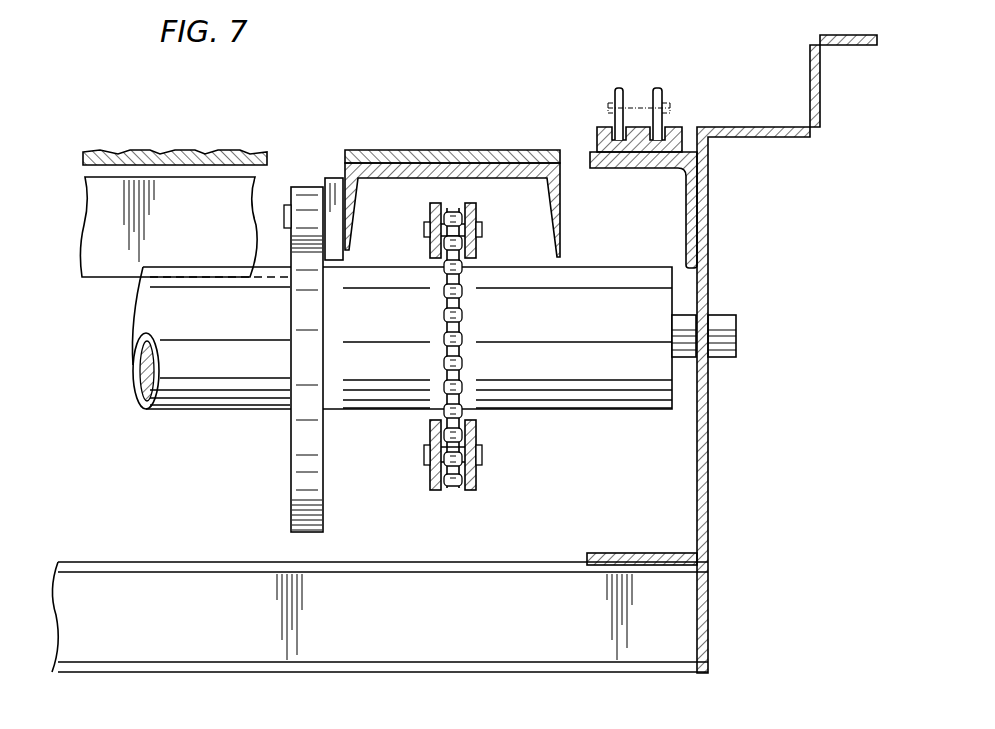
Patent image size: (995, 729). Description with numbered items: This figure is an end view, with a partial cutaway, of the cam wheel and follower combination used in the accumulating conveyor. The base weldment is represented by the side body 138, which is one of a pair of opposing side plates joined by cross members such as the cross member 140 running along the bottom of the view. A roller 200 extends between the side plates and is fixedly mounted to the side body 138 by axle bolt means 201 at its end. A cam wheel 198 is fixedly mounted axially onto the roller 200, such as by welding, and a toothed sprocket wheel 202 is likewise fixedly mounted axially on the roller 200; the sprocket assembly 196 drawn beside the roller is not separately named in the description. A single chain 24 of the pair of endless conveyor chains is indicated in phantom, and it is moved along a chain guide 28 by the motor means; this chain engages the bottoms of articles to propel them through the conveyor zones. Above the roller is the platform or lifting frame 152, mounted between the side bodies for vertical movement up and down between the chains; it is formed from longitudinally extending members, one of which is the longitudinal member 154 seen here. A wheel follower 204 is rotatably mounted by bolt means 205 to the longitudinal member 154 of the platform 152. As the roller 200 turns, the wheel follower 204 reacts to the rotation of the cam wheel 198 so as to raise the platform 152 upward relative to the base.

The chain 24 is at (637, 101).
The chain guide 28 is at (592, 152).
The side body 138 is at (703, 438).
The cross member 140 is at (680, 617).
The lifting frame 152 is at (90, 193).
The longitudinal member 154 is at (438, 170).
The sprocket 196 is at (435, 489).
The cam wheel 198 is at (290, 470).
The roller 200 is at (199, 391).
The axle bolt means 201 is at (723, 315).
The toothed sprocket wheel 202 is at (460, 327).
The wheel follower 204 is at (308, 191).
The bolt means 205 is at (283, 209).